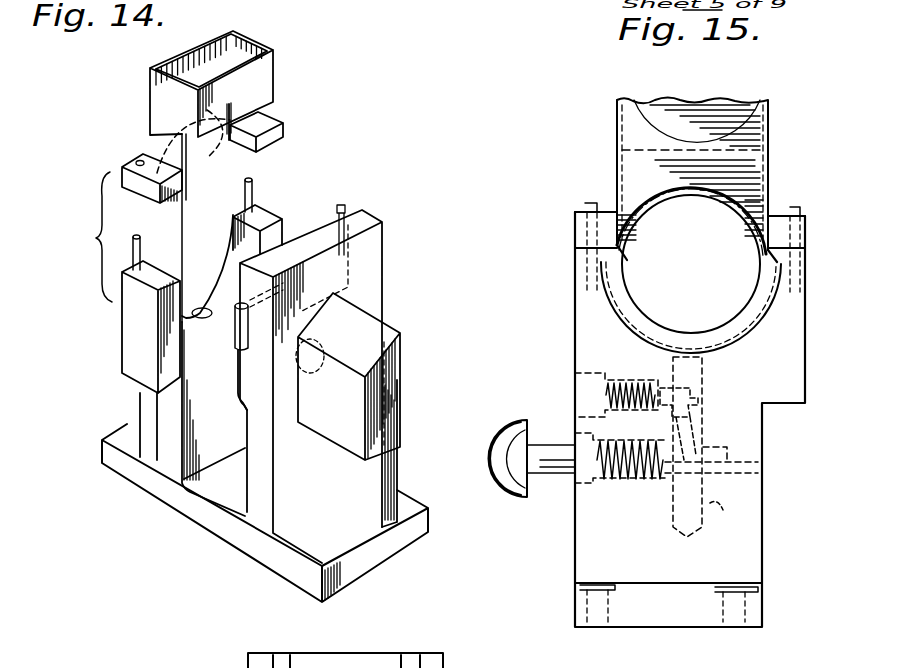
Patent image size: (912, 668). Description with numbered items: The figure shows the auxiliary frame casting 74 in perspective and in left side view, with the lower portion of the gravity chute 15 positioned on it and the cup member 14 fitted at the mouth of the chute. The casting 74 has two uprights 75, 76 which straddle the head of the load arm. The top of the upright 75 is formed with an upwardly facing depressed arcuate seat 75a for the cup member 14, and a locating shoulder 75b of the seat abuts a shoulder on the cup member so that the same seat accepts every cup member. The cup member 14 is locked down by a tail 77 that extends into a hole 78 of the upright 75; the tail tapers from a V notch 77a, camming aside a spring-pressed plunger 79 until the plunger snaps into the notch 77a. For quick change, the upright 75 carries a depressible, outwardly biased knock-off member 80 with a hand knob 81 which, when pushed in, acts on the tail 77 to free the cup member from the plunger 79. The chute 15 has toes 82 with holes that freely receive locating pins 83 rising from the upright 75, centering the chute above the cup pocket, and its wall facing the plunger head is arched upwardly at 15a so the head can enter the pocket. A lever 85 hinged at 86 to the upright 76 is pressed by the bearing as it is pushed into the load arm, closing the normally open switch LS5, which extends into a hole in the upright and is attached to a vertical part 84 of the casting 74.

In FIG. 15, the cup member 14 is at (625, 305).
In FIG. 14, the gravity chute 15 is at (262, 78).
In FIG. 15, the gravity chute 15 is at (767, 147).
In FIG. 14, the arched wall of chute 15a is at (197, 141).
In FIG. 15, the arched wall of chute 15a is at (724, 205).
In FIG. 14, the casting 74 is at (182, 506).
In FIG. 15, the casting 74 is at (573, 600).
In FIG. 14, the upright 75 is at (130, 326).
In FIG. 15, the upright 75 is at (573, 553).
In FIG. 14, the seat 75a is at (236, 237).
In FIG. 14, the locating shoulder 75b is at (190, 260).
In FIG. 14, the upright 76 is at (382, 280).
In FIG. 15, the tail 77 is at (702, 382).
In FIG. 15, the V notch 77a is at (693, 410).
In FIG. 15, the hole 78 is at (712, 505).
In FIG. 15, the spring-pressed plunger 79 is at (672, 377).
In FIG. 15, the knock-off member 80 is at (547, 447).
In FIG. 15, the hand knob 81 is at (510, 493).
In FIG. 14, the toes 82 is at (161, 205).
In FIG. 15, the toes 82 is at (575, 230).
In FIG. 14, the locating pins 83 is at (132, 241).
In FIG. 15, the locating pins 83 is at (596, 202).
In FIG. 14, the vertical part 84 is at (392, 477).
In FIG. 14, the lever 85 is at (240, 346).
In FIG. 14, the hinge 86 is at (348, 205).
In FIG. 14, the switch LS5 is at (390, 423).